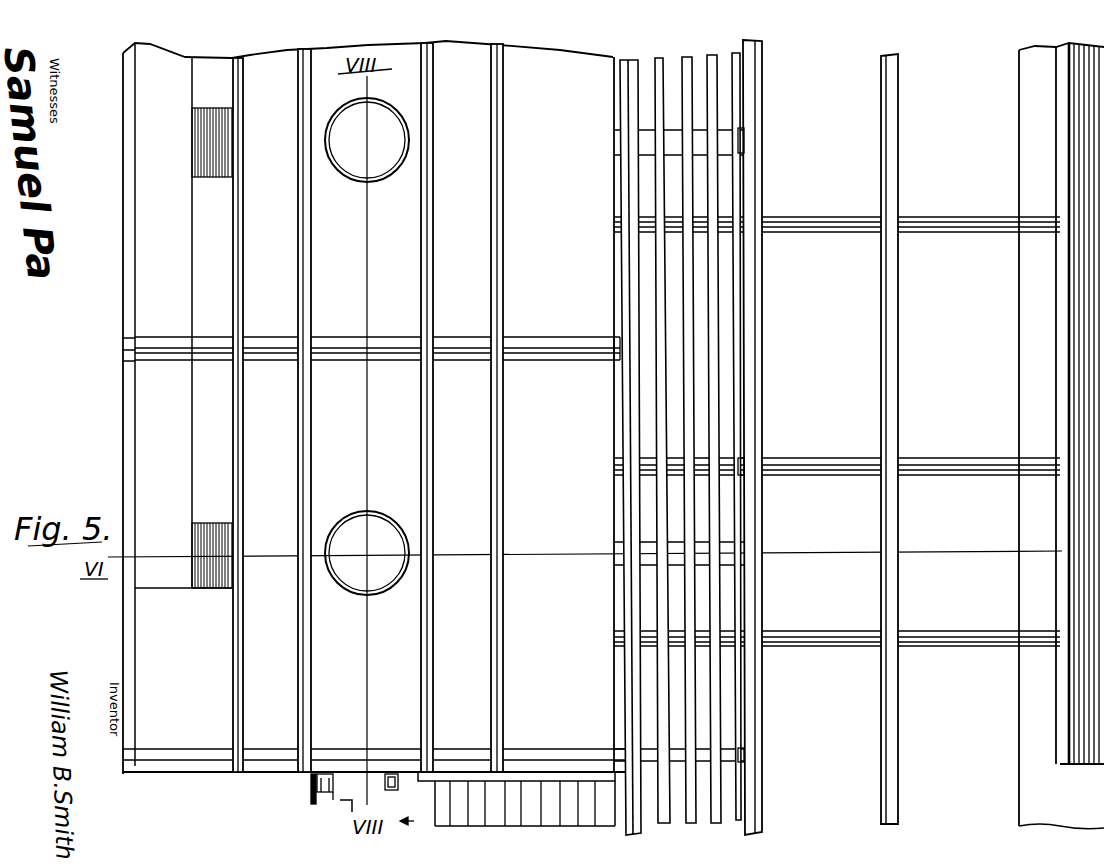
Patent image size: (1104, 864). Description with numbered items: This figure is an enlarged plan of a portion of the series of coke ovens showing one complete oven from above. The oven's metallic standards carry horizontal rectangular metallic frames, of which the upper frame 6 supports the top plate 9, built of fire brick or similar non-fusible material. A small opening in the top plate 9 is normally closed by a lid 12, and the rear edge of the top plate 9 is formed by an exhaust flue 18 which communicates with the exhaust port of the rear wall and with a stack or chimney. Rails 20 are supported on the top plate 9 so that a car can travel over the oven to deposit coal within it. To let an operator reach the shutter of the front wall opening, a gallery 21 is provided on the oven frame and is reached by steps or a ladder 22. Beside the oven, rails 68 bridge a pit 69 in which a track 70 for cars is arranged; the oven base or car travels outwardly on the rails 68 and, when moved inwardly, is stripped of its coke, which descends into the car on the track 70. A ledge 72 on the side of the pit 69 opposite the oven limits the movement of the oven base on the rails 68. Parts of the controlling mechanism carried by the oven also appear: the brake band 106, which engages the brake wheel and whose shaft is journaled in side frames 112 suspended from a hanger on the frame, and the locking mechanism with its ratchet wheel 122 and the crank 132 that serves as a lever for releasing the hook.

The horizontal rectangular metallic frame 6 is at (128, 233).
The exhaust flue 18 is at (168, 247).
The lid 12 is at (367, 346).
The top plate 9 is at (374, 406).
The rails 20 is at (303, 452).
The gallery 21 is at (690, 300).
The rails 68 is at (805, 222).
The ledge 72 is at (1060, 548).
The pit 69 is at (1016, 439).
The track 70 is at (892, 800).
The steps or ladder 22 is at (520, 795).
The brake band 106 is at (320, 785).
The side frames 112 is at (310, 790).
The ratchet wheel 122 is at (393, 772).
The crank 132 is at (365, 805).